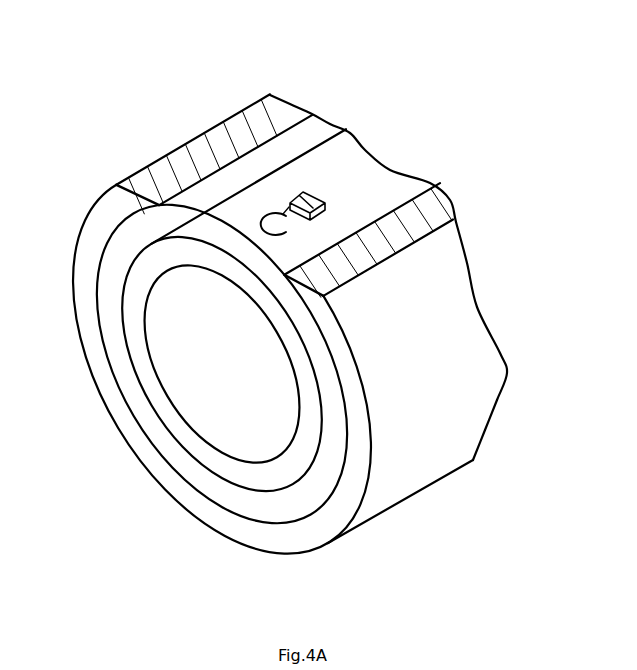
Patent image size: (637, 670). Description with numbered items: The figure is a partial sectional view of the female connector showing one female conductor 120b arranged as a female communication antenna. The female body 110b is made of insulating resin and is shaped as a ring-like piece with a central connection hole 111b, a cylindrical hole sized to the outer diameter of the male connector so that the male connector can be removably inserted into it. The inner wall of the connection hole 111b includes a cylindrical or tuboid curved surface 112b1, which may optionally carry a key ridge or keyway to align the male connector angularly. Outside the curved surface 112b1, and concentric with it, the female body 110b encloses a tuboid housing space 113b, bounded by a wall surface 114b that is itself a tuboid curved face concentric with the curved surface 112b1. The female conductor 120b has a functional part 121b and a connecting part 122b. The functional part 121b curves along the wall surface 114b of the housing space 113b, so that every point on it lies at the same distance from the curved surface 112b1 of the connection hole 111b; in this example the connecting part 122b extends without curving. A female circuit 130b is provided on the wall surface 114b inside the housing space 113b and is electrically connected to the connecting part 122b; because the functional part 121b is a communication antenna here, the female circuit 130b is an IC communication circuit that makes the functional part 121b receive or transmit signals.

The female body 110b is at (429, 508).
The connection hole 111b is at (223, 375).
The curved surface 112b1 is at (238, 433).
The housing space 113b is at (270, 514).
The wall surface 114b is at (158, 162).
The female conductor 120b is at (251, 59).
The functional part 121b is at (217, 228).
The connecting part 122b is at (280, 210).
The female circuit 130b is at (308, 193).